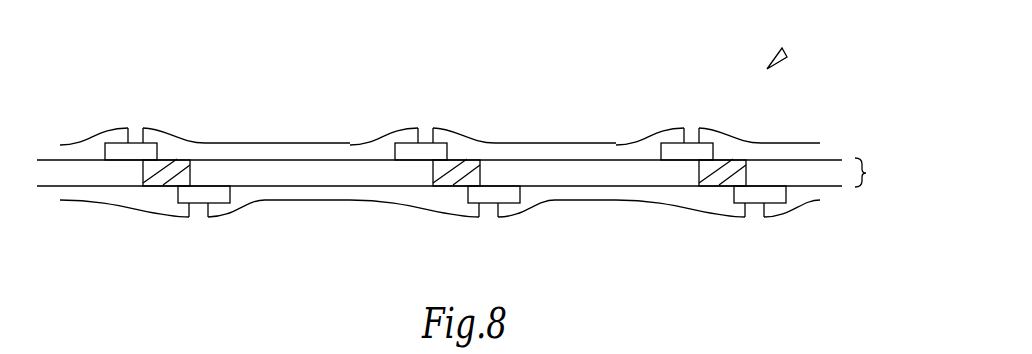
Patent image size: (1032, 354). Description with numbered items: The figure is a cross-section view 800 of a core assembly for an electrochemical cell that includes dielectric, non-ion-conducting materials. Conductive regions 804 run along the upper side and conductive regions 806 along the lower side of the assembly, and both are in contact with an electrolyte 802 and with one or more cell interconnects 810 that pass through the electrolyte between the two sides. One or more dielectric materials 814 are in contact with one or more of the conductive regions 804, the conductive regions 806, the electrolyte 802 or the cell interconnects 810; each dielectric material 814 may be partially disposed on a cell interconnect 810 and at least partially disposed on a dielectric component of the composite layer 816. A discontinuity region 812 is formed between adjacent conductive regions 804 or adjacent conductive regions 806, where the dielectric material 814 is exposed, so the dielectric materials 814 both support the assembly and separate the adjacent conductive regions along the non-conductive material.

The cross-section view 800 is at (787, 57).
The electrolyte 802 is at (238, 170).
The conductive region 804 is at (175, 138).
The conductive region 806 is at (308, 196).
The cell interconnect 810 is at (160, 178).
The discontinuity region 812 is at (135, 130).
The dielectric material 814 is at (117, 145).
The composite layer 816 is at (875, 173).